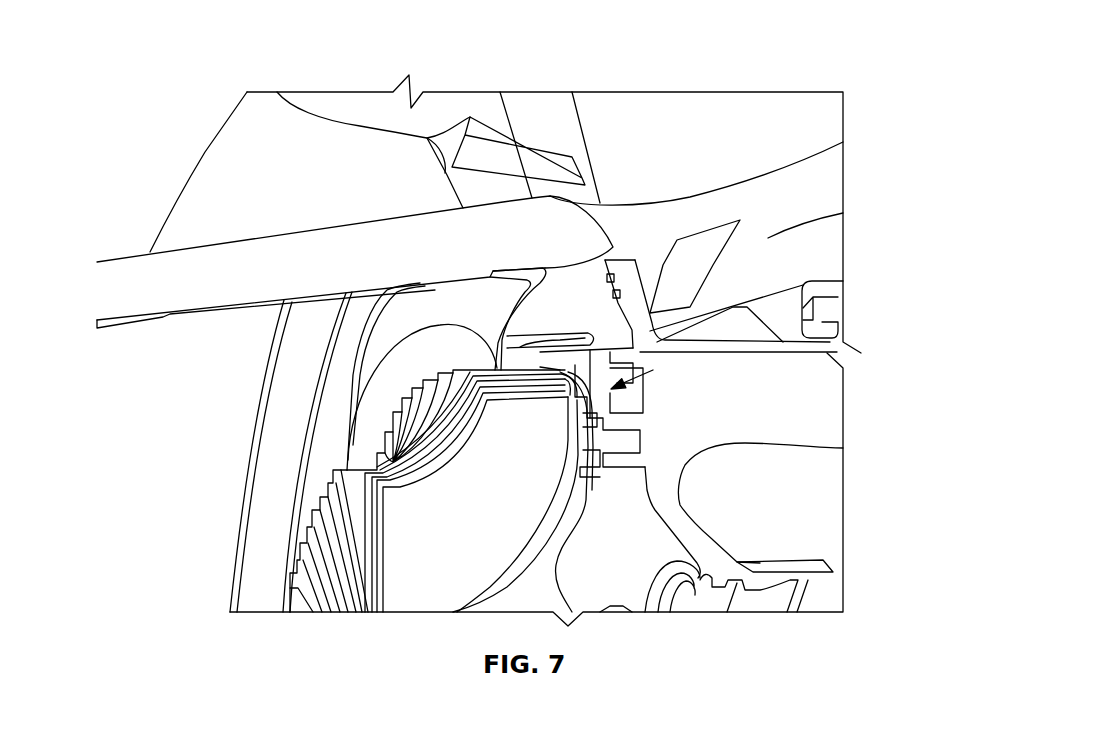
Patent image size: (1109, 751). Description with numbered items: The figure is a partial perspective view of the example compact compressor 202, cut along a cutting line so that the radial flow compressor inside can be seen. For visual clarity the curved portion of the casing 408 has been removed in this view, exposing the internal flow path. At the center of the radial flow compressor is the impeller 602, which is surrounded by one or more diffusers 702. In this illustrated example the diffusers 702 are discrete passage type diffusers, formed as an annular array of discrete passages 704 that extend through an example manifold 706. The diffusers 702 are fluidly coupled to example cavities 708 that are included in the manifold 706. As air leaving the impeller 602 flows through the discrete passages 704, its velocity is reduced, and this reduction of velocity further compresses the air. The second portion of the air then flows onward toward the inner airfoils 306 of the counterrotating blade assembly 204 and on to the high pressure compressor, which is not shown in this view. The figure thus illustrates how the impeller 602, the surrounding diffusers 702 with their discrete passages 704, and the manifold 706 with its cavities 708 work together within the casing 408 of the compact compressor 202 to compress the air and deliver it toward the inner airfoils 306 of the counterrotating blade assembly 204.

The counterrotating blade assembly 204 is at (753, 120).
The casing 408 is at (146, 253).
The impeller 602 is at (386, 336).
The compact compressor 202 is at (319, 391).
The cavities 708 is at (579, 276).
The inner airfoils 306 is at (843, 213).
The diffusers 702 is at (563, 333).
The discrete passages 704 is at (566, 332).
The manifold 706 is at (832, 357).